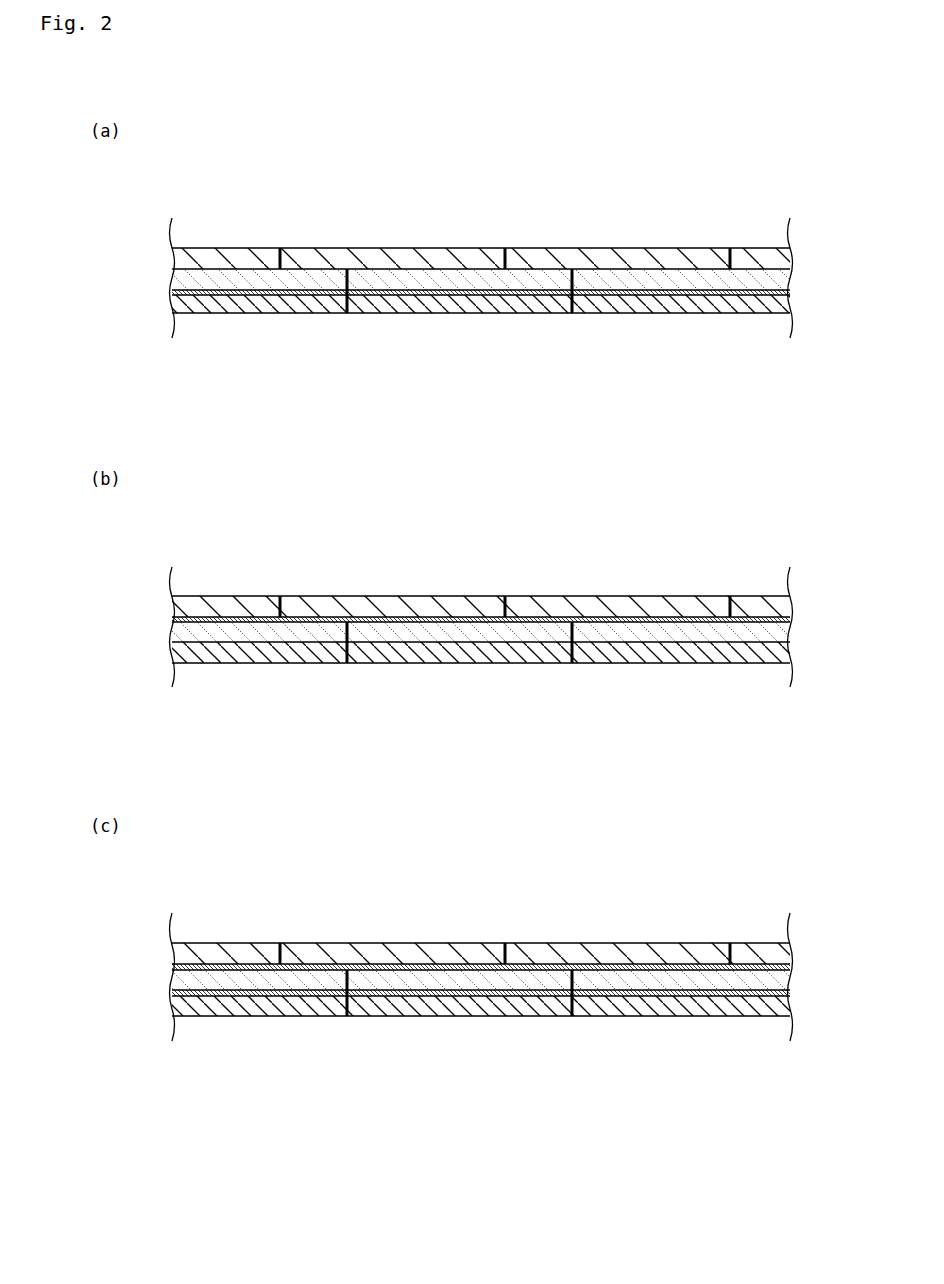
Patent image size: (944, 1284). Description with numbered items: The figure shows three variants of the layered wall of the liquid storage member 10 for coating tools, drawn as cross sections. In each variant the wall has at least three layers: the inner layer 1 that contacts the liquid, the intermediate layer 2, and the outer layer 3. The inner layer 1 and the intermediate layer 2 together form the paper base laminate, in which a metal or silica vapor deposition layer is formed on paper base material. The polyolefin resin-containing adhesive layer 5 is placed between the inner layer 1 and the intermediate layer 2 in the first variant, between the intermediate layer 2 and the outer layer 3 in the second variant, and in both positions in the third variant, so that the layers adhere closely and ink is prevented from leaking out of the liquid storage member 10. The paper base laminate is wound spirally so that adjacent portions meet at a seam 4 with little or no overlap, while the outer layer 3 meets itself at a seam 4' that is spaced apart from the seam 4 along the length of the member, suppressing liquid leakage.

The inner layer 1 is at (182, 304).
The intermediate layer 2 is at (182, 280).
The outer layer 3 is at (186, 260).
The seam 4 is at (459, 679).
The seam of the outer layer 4' is at (535, 572).
The adhesive layer 5 is at (790, 292).
The liquid storage member 10 is at (425, 167).